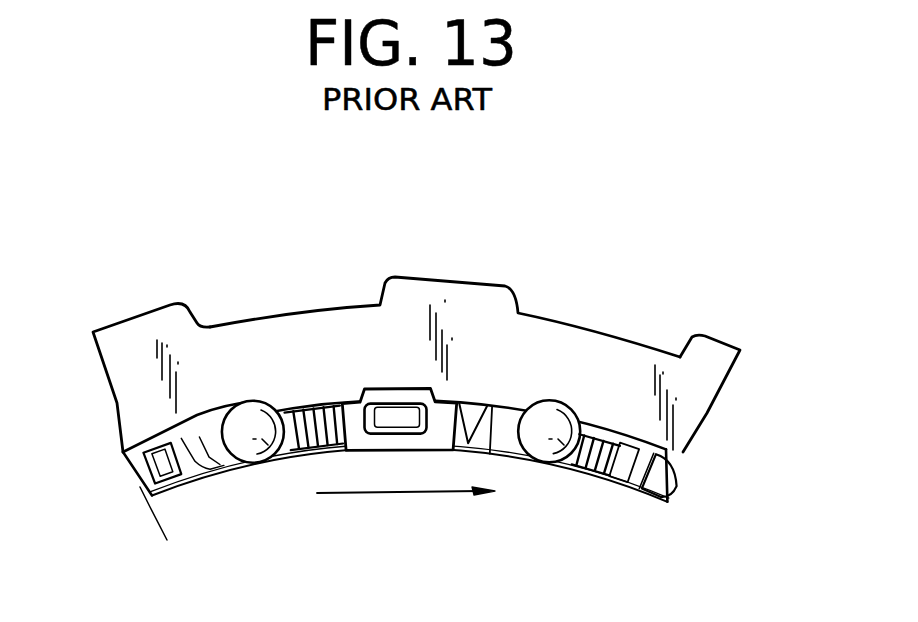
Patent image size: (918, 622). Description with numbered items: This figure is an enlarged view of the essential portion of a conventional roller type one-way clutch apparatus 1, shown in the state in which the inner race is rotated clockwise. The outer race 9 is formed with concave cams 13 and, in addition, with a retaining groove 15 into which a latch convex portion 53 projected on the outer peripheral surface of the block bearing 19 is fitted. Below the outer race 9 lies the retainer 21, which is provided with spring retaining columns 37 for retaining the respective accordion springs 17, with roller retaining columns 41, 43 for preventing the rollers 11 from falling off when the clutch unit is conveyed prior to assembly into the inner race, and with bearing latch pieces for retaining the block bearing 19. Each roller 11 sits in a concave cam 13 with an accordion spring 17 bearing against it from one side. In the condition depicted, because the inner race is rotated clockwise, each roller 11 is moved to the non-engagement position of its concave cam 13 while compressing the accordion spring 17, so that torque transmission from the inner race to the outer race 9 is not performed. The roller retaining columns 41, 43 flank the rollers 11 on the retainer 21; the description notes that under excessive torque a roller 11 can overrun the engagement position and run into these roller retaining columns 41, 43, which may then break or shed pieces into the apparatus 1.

The one-way clutch assembly 1 is at (147, 225).
The outer race 9 is at (664, 335).
The roller 11 is at (270, 460).
The concave cam 13 is at (212, 413).
The retaining groove 15 is at (413, 387).
The accordion spring 17 is at (281, 403).
The block bearing 19 is at (392, 462).
The retainer 21 is at (686, 446).
The spring retaining column 37 is at (322, 457).
The roller retaining column 41 is at (476, 458).
The roller retaining column 43 is at (191, 470).
The latch convex portion 53 is at (398, 387).